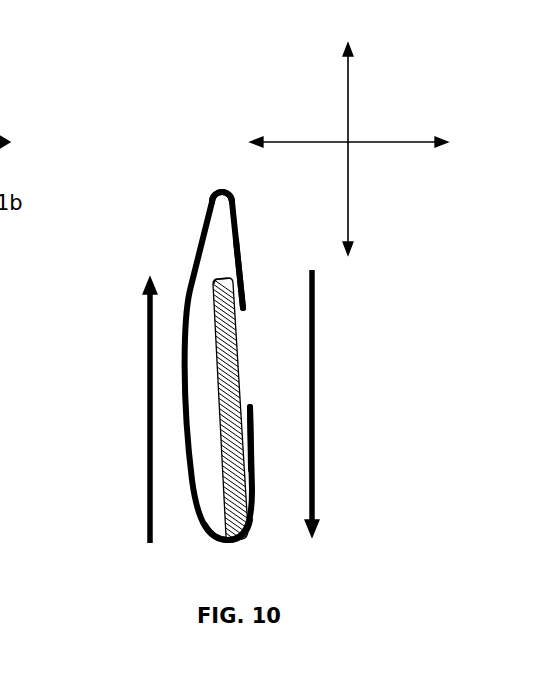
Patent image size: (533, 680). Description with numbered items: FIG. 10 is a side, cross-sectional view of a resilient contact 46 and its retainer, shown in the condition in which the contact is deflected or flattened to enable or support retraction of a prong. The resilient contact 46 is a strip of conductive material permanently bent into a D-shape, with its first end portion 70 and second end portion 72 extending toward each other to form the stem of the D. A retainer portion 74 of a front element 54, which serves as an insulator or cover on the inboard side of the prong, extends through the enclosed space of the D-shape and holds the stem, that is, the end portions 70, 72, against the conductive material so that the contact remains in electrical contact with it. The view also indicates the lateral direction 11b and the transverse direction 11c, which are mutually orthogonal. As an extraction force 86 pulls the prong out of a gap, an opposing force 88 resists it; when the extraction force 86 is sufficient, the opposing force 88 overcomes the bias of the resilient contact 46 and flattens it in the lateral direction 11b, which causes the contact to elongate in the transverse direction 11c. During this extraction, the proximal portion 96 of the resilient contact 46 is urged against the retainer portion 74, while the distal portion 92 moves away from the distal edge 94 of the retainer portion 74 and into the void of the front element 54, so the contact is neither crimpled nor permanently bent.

The lateral direction 11b is at (375, 143).
The transverse direction 11c is at (348, 93).
The resilient contact 46 is at (193, 265).
The front element 54 is at (225, 357).
The first end portion 70 is at (245, 254).
The second end portion 72 is at (256, 452).
The retainer portion 74 is at (135, 423).
The extraction force 86 is at (315, 386).
The opposing force 88 is at (147, 422).
The distal portion 92 is at (217, 186).
The distal edge 94 is at (221, 276).
The proximal portion 96 is at (230, 547).